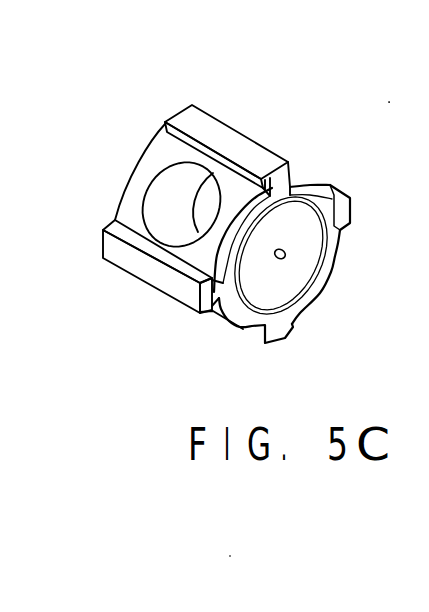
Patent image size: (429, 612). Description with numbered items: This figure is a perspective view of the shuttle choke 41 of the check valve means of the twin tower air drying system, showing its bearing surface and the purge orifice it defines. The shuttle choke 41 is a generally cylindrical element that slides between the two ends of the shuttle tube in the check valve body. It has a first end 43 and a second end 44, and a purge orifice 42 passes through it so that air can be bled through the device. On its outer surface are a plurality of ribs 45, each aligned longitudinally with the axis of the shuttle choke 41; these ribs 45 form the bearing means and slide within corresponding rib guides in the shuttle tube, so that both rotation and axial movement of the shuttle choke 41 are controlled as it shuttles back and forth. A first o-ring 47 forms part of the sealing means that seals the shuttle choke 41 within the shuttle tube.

The shuttle choke 41 is at (281, 134).
The purge orifice 42 is at (285, 255).
The first end 43 is at (290, 280).
The second end 44 is at (127, 172).
The ribs 45 is at (200, 109).
The first o-ring 47 is at (255, 316).